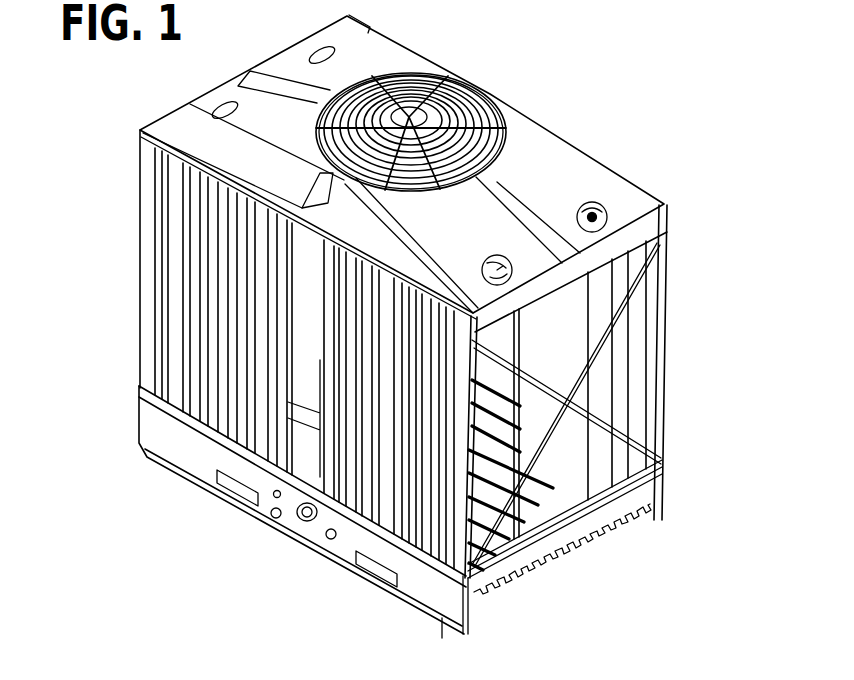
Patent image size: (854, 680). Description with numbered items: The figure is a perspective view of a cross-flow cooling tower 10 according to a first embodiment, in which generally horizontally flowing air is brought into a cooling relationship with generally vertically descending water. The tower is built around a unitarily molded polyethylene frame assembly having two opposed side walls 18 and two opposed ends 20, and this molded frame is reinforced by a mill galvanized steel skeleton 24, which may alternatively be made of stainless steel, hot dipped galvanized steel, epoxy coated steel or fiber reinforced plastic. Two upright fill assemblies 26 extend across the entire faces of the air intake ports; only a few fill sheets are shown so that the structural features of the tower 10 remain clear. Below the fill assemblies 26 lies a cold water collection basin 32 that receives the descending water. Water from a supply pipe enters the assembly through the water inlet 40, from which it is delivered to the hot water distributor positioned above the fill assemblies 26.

The cooling tower 10 is at (618, 94).
The side wall 18 is at (322, 359).
The end 20 is at (118, 267).
The skeleton 24 is at (590, 401).
The fill assembly 26 is at (553, 337).
The cold water collection basin 32 is at (506, 562).
The water inlet 40 is at (313, 170).